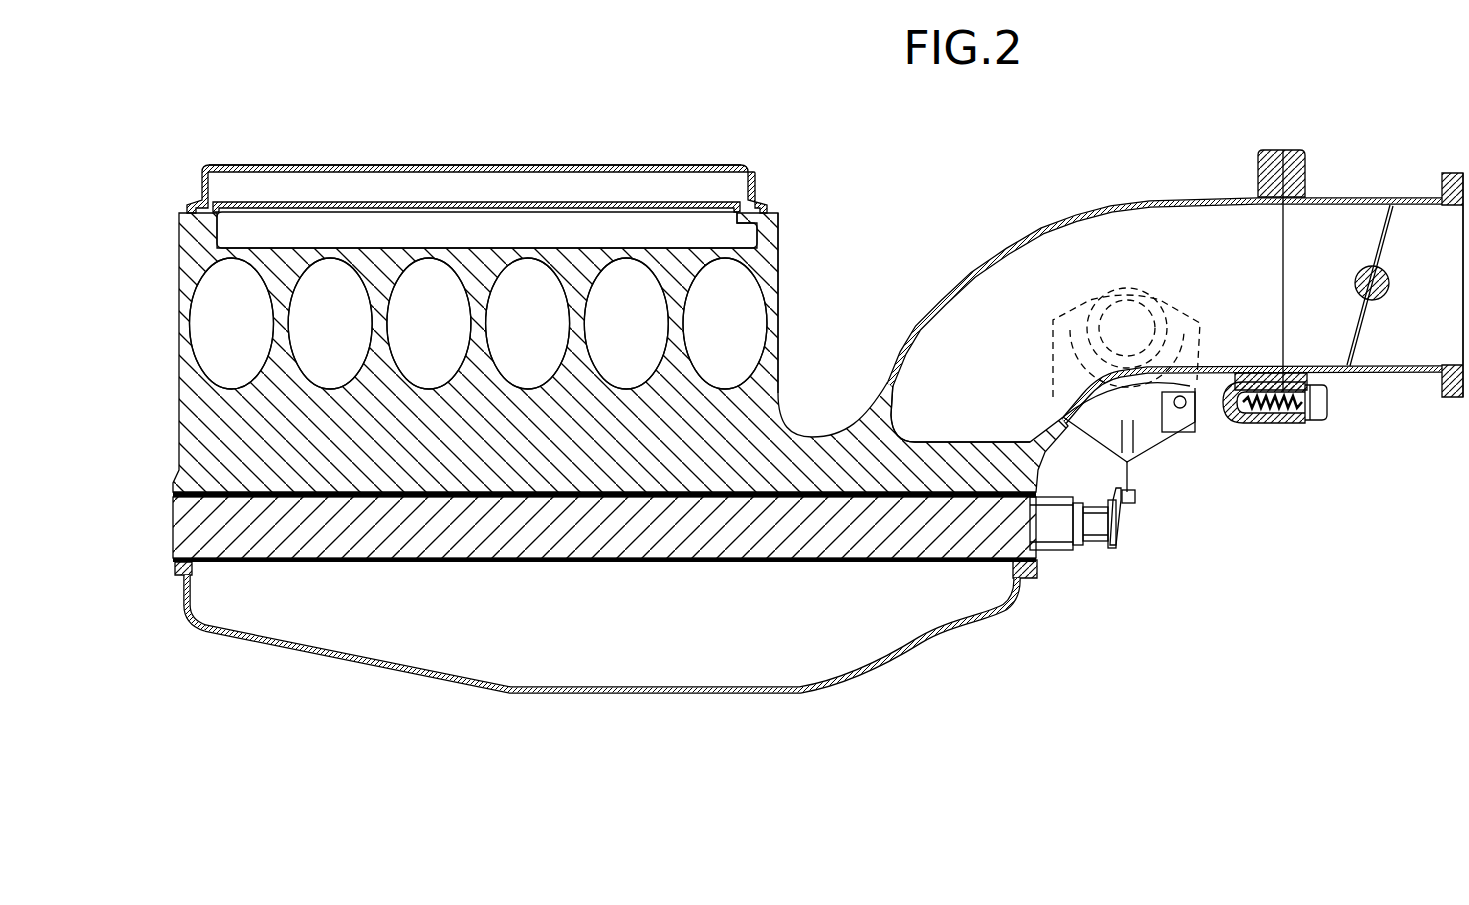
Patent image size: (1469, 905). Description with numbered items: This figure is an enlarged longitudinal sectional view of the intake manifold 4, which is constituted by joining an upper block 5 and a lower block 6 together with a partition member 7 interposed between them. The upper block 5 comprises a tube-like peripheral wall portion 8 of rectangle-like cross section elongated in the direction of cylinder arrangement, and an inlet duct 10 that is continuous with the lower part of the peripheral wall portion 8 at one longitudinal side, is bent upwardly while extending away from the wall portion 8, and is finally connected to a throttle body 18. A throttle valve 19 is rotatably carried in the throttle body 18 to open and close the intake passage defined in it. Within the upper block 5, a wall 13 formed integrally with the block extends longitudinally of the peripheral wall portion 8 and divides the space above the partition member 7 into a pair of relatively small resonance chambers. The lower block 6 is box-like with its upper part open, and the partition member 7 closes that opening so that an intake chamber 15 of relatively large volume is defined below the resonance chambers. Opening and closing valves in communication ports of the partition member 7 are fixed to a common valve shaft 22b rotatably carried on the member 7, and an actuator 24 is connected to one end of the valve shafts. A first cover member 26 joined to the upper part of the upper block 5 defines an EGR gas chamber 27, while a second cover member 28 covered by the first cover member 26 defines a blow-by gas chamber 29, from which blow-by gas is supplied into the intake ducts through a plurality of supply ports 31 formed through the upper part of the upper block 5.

The intake manifold 4 is at (142, 418).
The upper block 5 is at (178, 434).
The lower block 6 is at (175, 565).
The partition member 7 is at (180, 509).
The peripheral wall portion 8 is at (778, 306).
The inlet duct 10 is at (989, 254).
The wall 13 is at (889, 429).
The intake chamber 15 is at (578, 667).
The throttle body 18 is at (1351, 199).
The throttle valve 19 is at (1383, 229).
The valve shaft 22b is at (1119, 539).
The actuator 24 is at (1158, 434).
The first cover member 26 is at (518, 170).
The EGR gas chamber 27 is at (400, 188).
The second cover member 28 is at (566, 203).
The blow-by gas chamber 29 is at (481, 226).
The supply ports 31 is at (226, 257).